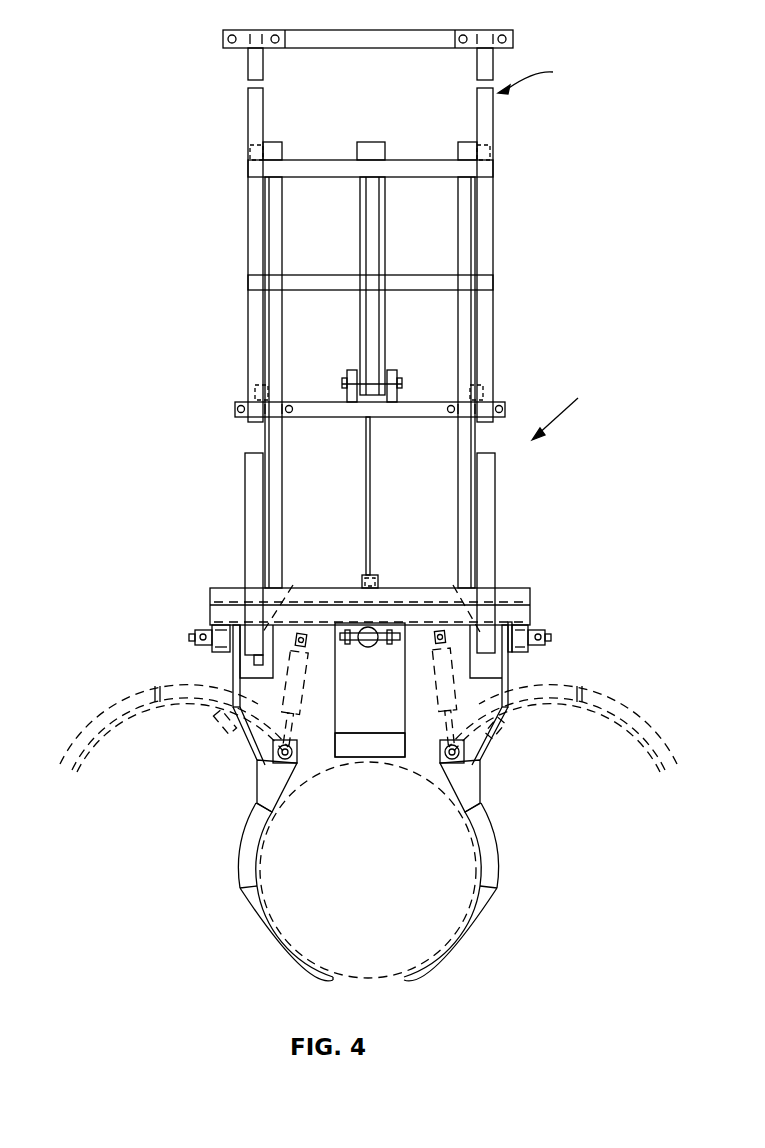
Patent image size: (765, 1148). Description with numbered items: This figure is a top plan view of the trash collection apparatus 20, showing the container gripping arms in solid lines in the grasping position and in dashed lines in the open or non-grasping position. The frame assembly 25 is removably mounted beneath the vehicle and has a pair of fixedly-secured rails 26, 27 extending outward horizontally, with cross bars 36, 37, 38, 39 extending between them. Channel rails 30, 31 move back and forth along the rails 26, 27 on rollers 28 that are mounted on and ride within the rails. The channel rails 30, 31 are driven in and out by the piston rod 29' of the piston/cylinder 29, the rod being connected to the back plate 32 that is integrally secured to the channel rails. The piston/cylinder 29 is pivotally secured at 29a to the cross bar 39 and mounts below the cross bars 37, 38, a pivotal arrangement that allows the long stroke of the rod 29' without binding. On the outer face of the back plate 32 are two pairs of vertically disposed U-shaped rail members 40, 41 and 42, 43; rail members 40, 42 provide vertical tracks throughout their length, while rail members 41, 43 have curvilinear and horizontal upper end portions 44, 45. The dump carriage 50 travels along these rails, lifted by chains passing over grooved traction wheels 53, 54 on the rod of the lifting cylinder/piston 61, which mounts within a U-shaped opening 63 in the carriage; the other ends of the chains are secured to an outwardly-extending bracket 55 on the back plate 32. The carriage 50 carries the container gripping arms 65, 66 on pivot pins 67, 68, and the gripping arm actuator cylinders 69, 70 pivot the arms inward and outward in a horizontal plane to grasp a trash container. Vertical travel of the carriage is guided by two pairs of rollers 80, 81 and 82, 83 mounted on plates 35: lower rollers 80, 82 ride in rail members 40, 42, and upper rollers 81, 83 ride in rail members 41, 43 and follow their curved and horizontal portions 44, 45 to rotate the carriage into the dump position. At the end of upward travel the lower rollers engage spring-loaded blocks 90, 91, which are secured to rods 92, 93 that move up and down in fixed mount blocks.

The trash collection apparatus 20 is at (569, 408).
The frame assembly 25 is at (548, 74).
The fixedly-secured rail 26 is at (494, 118).
The fixedly-secured rail 27 is at (247, 121).
The rollers 28 is at (250, 152).
The piston/cylinder 29 is at (340, 286).
The pivotal mounting 29a is at (346, 368).
The piston rod 29' is at (398, 496).
The channel rail 30 is at (460, 221).
The channel rail 31 is at (281, 261).
The back plate 32 is at (330, 590).
The plates 35 is at (236, 660).
The cross bar 36 is at (408, 46).
The cross bar 37 is at (418, 176).
The cross bar 38 is at (426, 286).
The cross bar 39 is at (442, 380).
The vertical rail member 40 is at (522, 627).
The rail member 41 is at (508, 642).
The vertical rail member 42 is at (236, 654).
The rail member 43 is at (256, 666).
The curvilinear and horizontal upper end portion 44 is at (495, 524).
The curvilinear and horizontal upper end portion 45 is at (255, 503).
The dump carriage 50 is at (500, 728).
The grooved traction wheel 53 is at (380, 580).
The grooved traction wheel 54 is at (297, 676).
The outwardly-extending bracket 55 is at (375, 644).
The lifting cylinder/piston 61 is at (364, 646).
The U-shaped opening 63 is at (364, 754).
The container gripping arm 65 is at (639, 724).
The container gripping arm 66 is at (80, 724).
The pivot pin 67 is at (445, 748).
The pivot pin 68 is at (293, 748).
The gripping arm actuator cylinder 69 is at (446, 690).
The gripping arm actuator cylinder 70 is at (216, 728).
The lower roller 80 is at (522, 649).
The upper roller 81 is at (456, 596).
The lower roller 82 is at (224, 636).
The upper roller 83 is at (292, 596).
The block 90 is at (541, 641).
The block 91 is at (192, 640).
The rod 92 is at (546, 636).
The rod 93 is at (195, 634).